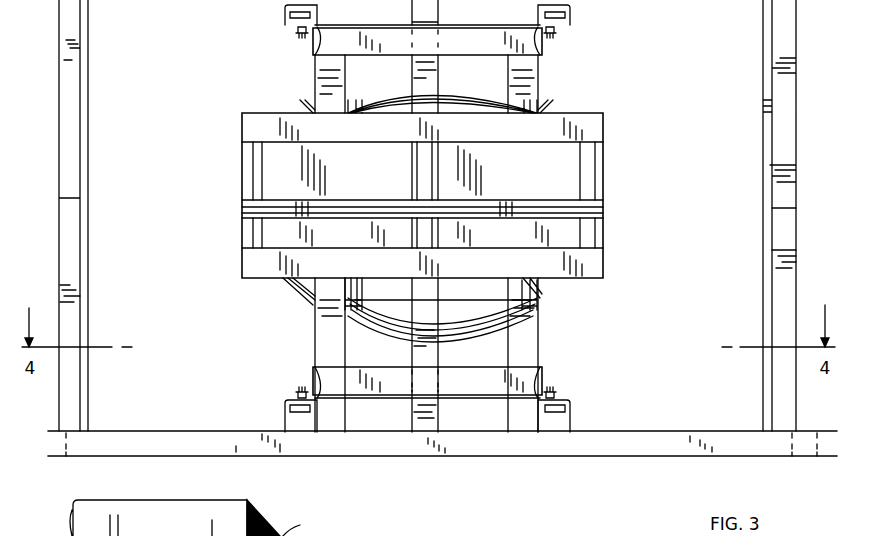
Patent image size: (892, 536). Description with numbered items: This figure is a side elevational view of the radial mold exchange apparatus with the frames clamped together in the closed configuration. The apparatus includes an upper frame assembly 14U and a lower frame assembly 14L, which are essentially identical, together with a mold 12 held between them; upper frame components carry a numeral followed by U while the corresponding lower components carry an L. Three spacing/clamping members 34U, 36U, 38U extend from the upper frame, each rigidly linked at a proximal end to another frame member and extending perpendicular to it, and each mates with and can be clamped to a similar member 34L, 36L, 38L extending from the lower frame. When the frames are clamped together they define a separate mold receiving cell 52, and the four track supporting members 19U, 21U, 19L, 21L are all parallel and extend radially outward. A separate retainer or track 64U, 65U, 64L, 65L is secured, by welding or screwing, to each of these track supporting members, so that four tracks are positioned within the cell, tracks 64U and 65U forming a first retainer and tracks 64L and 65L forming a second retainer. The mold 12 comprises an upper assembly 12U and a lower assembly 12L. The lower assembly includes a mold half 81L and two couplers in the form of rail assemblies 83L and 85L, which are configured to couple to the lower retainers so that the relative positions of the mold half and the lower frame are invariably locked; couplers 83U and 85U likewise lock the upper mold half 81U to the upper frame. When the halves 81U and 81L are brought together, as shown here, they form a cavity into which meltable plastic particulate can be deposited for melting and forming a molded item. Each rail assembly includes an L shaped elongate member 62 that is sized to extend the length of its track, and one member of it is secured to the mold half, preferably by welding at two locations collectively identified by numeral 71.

The mold 12 is at (414, 191).
The upper assembly 12U is at (560, 175).
The lower assembly 12L is at (585, 240).
The upper frame assembly 14U is at (240, 0).
The lower frame assembly 14L is at (530, 449).
The track supporting member 19U is at (320, 9).
The track supporting member 19L is at (285, 420).
The track supporting member 21U is at (575, 15).
The track supporting member 21L is at (575, 420).
The spacing/clamping member 34U is at (420, 18).
The spacing/clamping member 34L is at (510, 352).
The spacing/clamping member 36U is at (790, 120).
The spacing/clamping member 36L is at (788, 252).
The spacing/clamping member 38U is at (88, 178).
The spacing/clamping member 38L is at (78, 280).
The mold receiving cell 52 is at (706, 112).
The L shaped elongate member 62 is at (283, 535).
The track 64U is at (283, 28).
The track 64L is at (283, 398).
The track 65U is at (572, 40).
The track 65L is at (575, 395).
The weld locations 71 is at (265, 520).
The mold half 81U is at (588, 128).
The mold half 81L is at (242, 242).
The rail assembly 83U is at (296, 60).
The rail assembly 83L is at (308, 350).
The rail assembly 85U is at (562, 57).
The rail assembly 85L is at (562, 380).